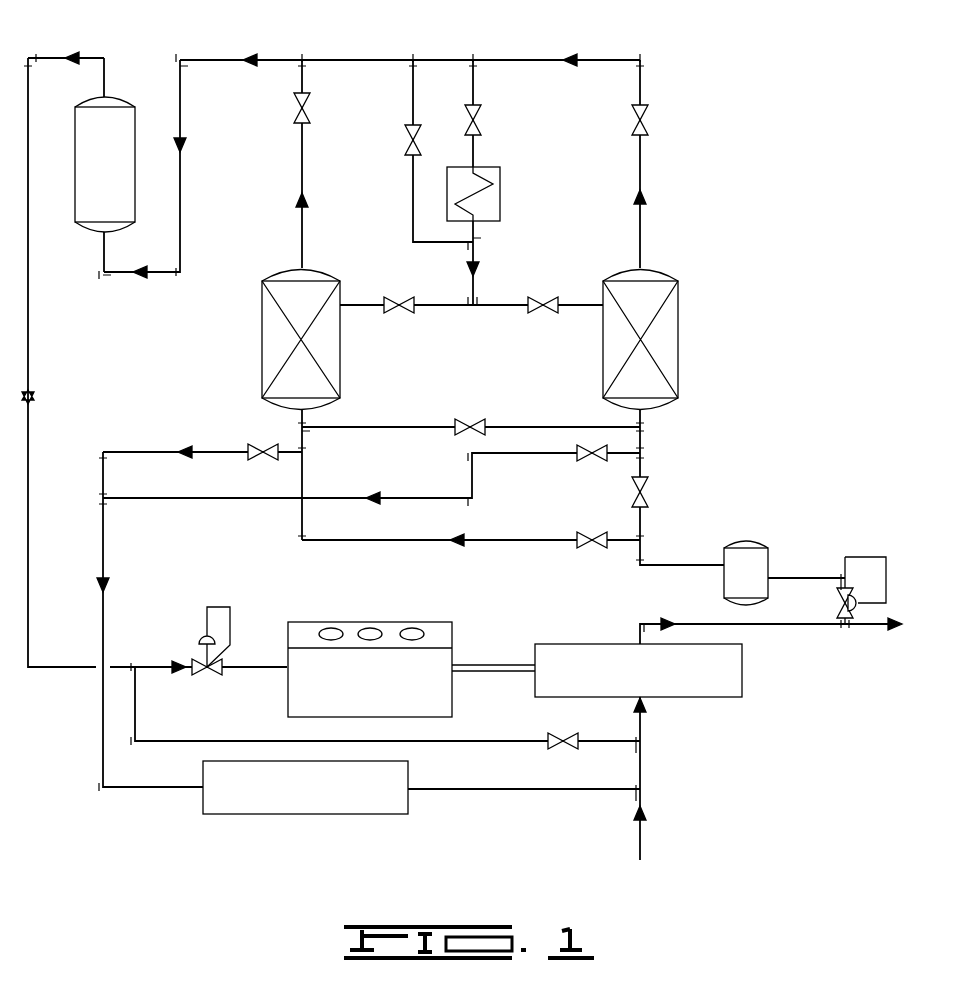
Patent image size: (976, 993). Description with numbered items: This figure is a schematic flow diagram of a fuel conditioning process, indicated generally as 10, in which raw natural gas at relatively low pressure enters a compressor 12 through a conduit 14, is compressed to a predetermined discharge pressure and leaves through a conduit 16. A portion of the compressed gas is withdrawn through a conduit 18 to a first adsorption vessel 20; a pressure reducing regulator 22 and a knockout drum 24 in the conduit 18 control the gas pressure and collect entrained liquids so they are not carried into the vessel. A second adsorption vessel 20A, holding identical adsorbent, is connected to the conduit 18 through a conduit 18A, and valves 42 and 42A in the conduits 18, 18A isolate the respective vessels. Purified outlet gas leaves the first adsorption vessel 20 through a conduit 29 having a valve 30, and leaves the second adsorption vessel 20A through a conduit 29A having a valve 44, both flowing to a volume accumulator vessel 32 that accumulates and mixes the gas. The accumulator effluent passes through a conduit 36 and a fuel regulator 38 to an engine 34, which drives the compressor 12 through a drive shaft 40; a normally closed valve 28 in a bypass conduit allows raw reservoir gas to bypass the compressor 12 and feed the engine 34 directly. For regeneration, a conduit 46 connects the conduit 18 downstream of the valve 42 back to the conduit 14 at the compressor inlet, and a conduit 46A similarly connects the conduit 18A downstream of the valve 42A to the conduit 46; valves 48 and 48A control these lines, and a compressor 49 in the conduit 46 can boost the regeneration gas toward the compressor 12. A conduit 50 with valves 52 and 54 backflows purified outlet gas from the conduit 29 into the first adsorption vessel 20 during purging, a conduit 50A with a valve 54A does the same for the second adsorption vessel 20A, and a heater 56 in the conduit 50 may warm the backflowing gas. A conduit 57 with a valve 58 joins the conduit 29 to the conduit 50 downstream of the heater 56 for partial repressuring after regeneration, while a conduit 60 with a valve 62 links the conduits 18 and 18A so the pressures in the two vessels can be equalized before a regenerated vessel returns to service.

The gas processing system 10 is at (676, 188).
The compressor 12 is at (746, 672).
The conduit 14 is at (642, 842).
The conduit 16 is at (634, 630).
The conduit 18 is at (645, 446).
The conduit 18A is at (304, 476).
The first adsorption vessel 20 is at (668, 340).
The second adsorption vessel 20A is at (336, 345).
The pressure reducing regulator 22 is at (836, 602).
The knockout drum 24 is at (752, 556).
The valve 28 is at (556, 734).
The conduit 29 is at (604, 52).
The conduit 29A is at (305, 178).
The valve 30 is at (647, 118).
The volume accumulator vessel 32 is at (117, 160).
The engine 34 is at (352, 630).
The conduit 36 is at (30, 338).
The fuel regulator 38 is at (200, 660).
The drive shaft 40 is at (478, 666).
The valve 42 is at (648, 492).
The valve 42A is at (586, 530).
The valve 44 is at (310, 104).
The conduit 46 is at (412, 497).
The conduit 46A is at (120, 450).
The valve 48 is at (586, 462).
The valve 48A is at (252, 444).
The compressor 49 is at (294, 815).
The conduit 50 is at (478, 92).
The conduit 50A is at (450, 300).
The valve 52 is at (482, 120).
The valve 54 is at (548, 296).
The valve 54A is at (399, 296).
The heater 56 is at (504, 178).
The conduit 57 is at (412, 94).
The valve 58 is at (420, 134).
The conduit 60 is at (358, 426).
The valve 62 is at (464, 418).